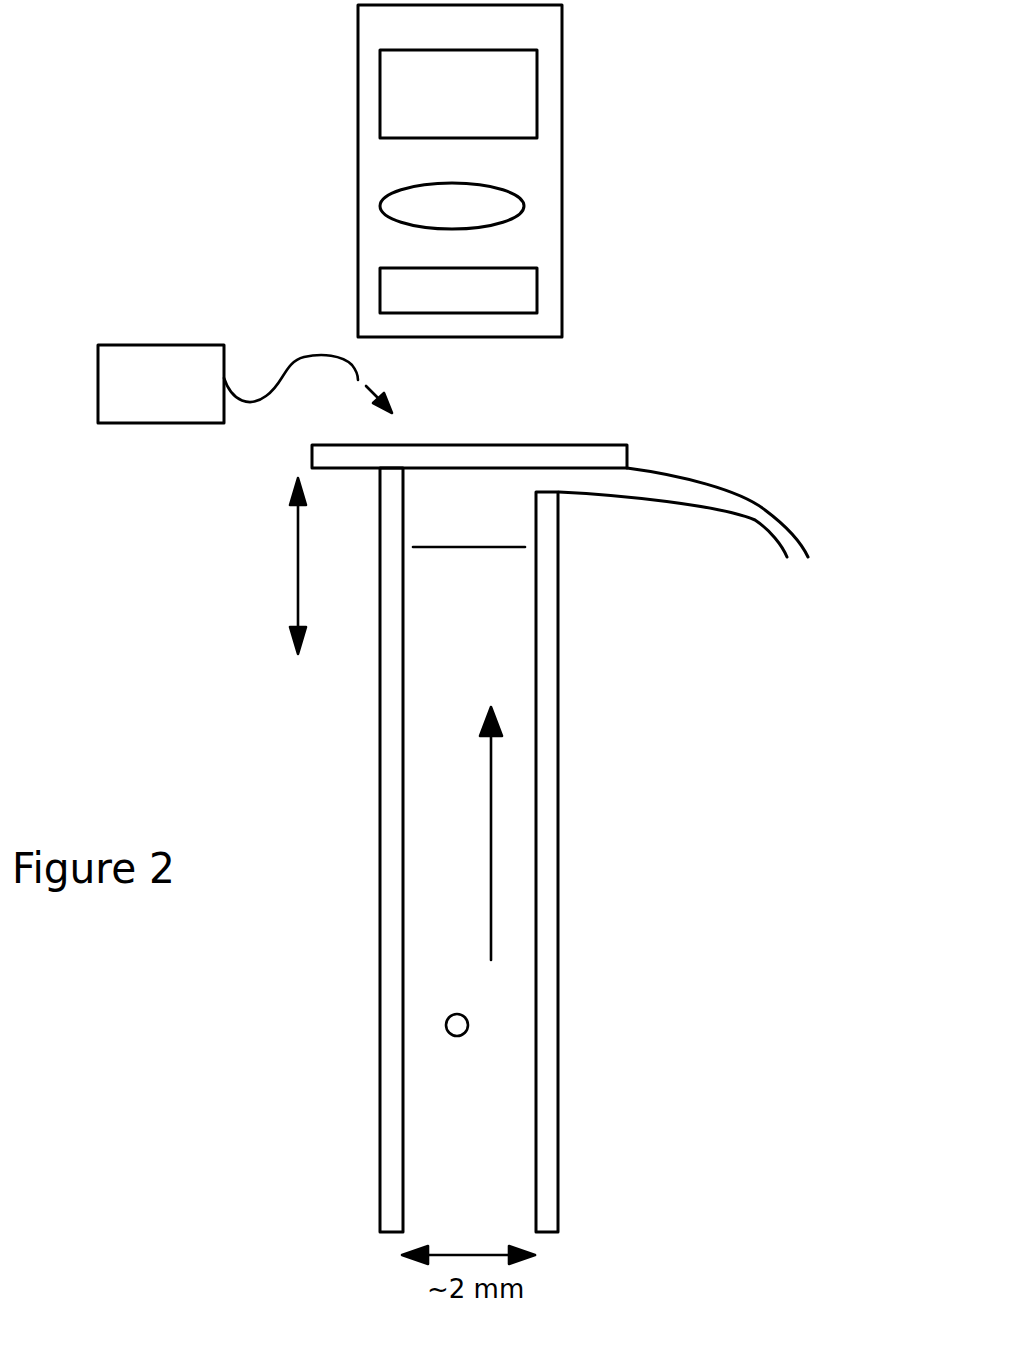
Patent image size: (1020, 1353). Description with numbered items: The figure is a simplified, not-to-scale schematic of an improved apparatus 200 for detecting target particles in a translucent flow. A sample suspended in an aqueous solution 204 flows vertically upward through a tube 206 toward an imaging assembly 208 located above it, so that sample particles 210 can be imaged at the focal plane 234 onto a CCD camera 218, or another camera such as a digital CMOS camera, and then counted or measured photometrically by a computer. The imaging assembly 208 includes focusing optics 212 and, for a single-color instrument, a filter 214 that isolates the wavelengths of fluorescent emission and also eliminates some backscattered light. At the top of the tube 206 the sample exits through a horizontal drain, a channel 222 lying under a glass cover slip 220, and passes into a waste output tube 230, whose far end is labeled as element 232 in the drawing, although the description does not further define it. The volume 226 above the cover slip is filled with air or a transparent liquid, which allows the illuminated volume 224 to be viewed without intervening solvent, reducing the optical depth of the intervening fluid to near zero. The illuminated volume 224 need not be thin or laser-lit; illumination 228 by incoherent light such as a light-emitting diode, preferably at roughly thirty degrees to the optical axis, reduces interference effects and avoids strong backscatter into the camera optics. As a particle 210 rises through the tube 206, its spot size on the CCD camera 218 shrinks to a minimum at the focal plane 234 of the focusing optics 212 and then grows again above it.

The apparatus 200 is at (152, 203).
The aqueous solution 204 is at (468, 1135).
The tube 206 is at (547, 906).
The imaging assembly 208 is at (562, 138).
The sample particles 210 is at (468, 1025).
The focusing optics 212 is at (452, 206).
The filter 214 is at (458, 290).
The CCD camera 218 is at (458, 94).
The glass cover slip 220 is at (312, 458).
The channel 222 is at (548, 482).
The illuminated volume 224 is at (304, 566).
The volume 226 is at (570, 415).
The illumination 228 is at (245, 384).
The waste output tube 230 is at (753, 505).
The conduit outlet 232 is at (793, 560).
The focal plane 234 is at (435, 547).